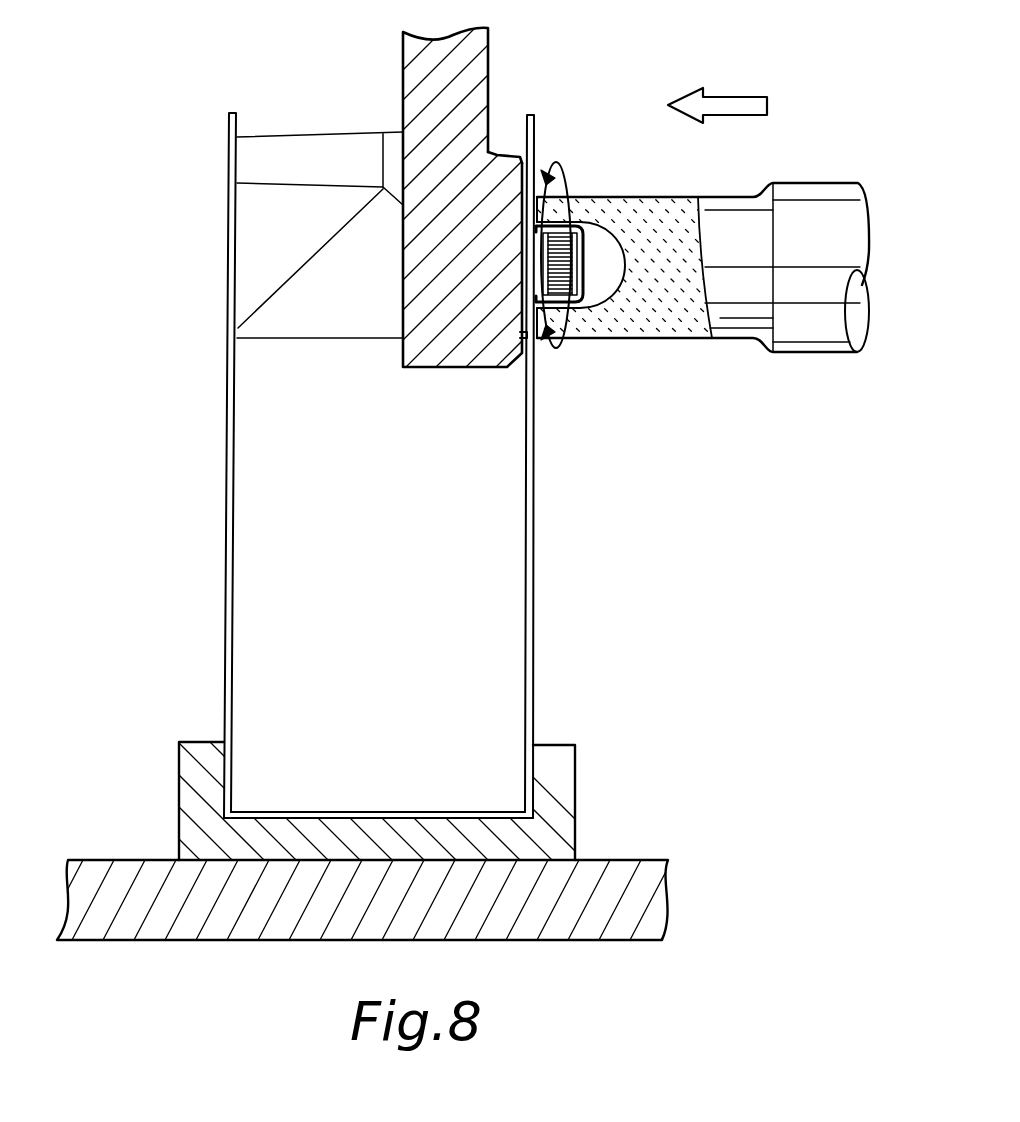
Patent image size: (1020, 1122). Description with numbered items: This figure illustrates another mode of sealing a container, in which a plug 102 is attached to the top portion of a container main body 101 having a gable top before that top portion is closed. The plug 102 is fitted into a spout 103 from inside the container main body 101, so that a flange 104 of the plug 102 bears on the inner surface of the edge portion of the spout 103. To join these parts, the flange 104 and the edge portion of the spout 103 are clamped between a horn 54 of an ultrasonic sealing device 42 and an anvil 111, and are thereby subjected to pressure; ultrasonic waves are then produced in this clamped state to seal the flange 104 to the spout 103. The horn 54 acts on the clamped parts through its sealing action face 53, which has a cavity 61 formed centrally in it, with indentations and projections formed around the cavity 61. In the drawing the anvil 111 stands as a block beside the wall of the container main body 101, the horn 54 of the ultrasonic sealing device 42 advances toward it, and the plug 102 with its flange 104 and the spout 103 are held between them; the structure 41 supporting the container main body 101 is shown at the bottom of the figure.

The base block 41 is at (558, 782).
The ultrasonic sealing device 42 is at (793, 121).
The sealing action face 53 is at (520, 208).
The horn 54 is at (832, 207).
The cavity 61 is at (612, 282).
The container main body 101 is at (535, 577).
The plug 102 is at (583, 297).
The spout 103 is at (568, 210).
The flange 104 is at (522, 340).
The anvil 111 is at (425, 102).